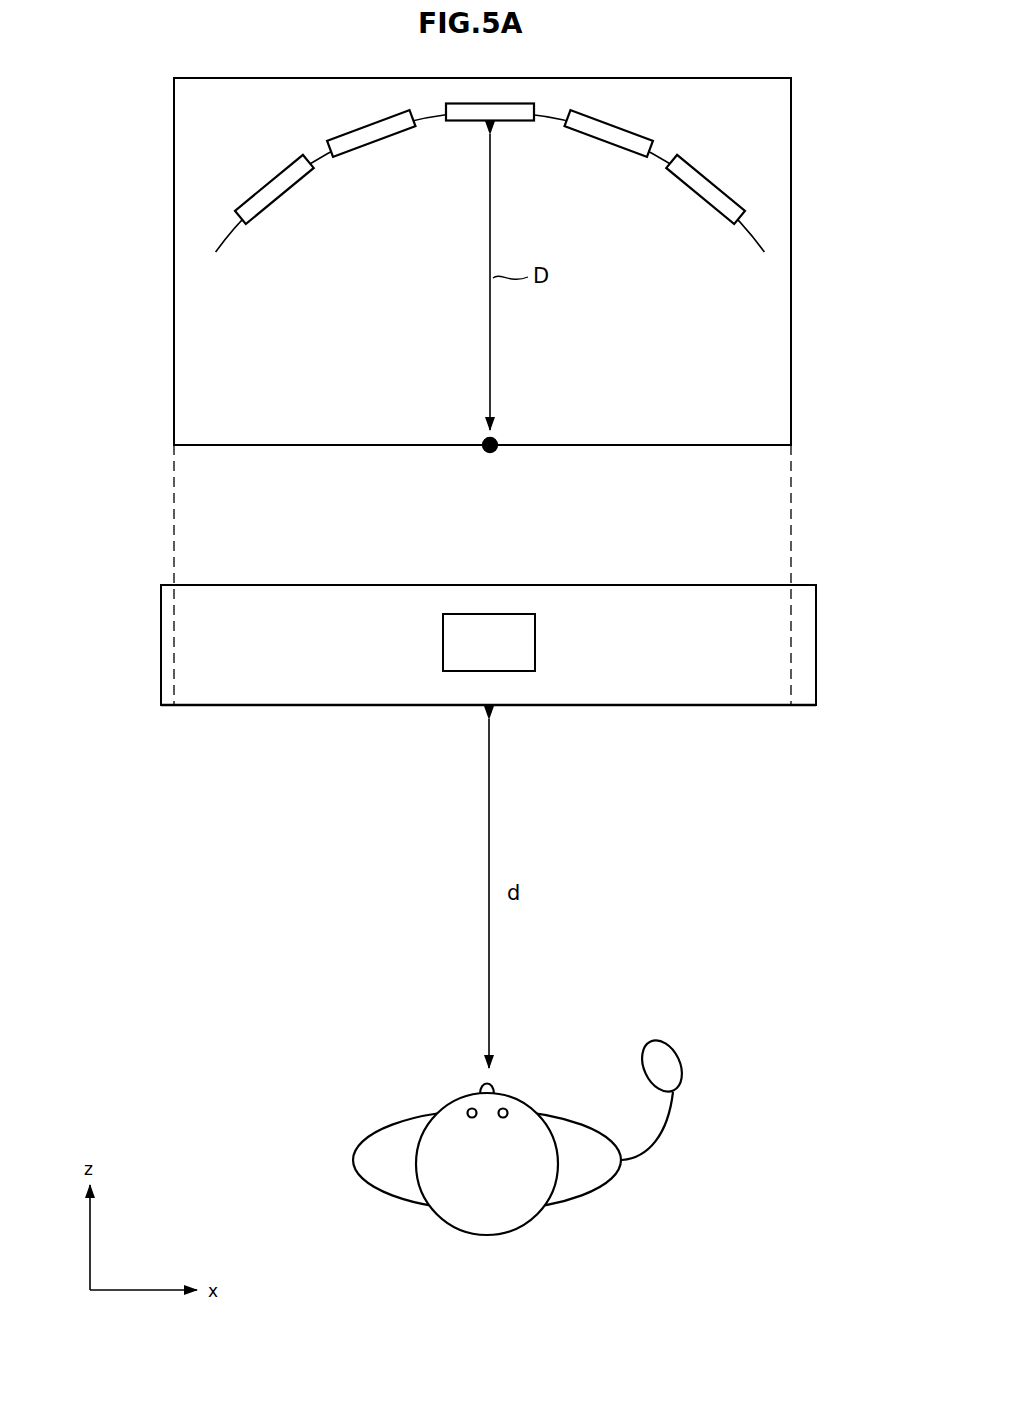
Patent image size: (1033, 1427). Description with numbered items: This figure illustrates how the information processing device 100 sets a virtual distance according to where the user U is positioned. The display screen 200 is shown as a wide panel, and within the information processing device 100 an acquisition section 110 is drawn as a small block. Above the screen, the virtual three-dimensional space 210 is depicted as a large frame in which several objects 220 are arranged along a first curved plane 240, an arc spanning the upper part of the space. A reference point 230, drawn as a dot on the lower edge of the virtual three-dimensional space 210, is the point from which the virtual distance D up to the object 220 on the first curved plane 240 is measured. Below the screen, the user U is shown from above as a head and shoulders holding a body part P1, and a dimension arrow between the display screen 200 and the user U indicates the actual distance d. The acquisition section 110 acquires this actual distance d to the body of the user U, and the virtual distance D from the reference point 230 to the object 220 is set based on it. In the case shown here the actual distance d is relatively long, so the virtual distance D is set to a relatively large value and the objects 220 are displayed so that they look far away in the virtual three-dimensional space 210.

The information processing device 100 is at (614, 575).
The acquisition section 110 is at (491, 614).
The display screen 200 is at (724, 706).
The virtual three-dimensional space 210 is at (637, 77).
The objects 220 is at (665, 124).
The reference point 230 is at (497, 438).
The first curved plane 240 is at (742, 240).
The user U is at (437, 1228).
The body part P1 is at (678, 1060).